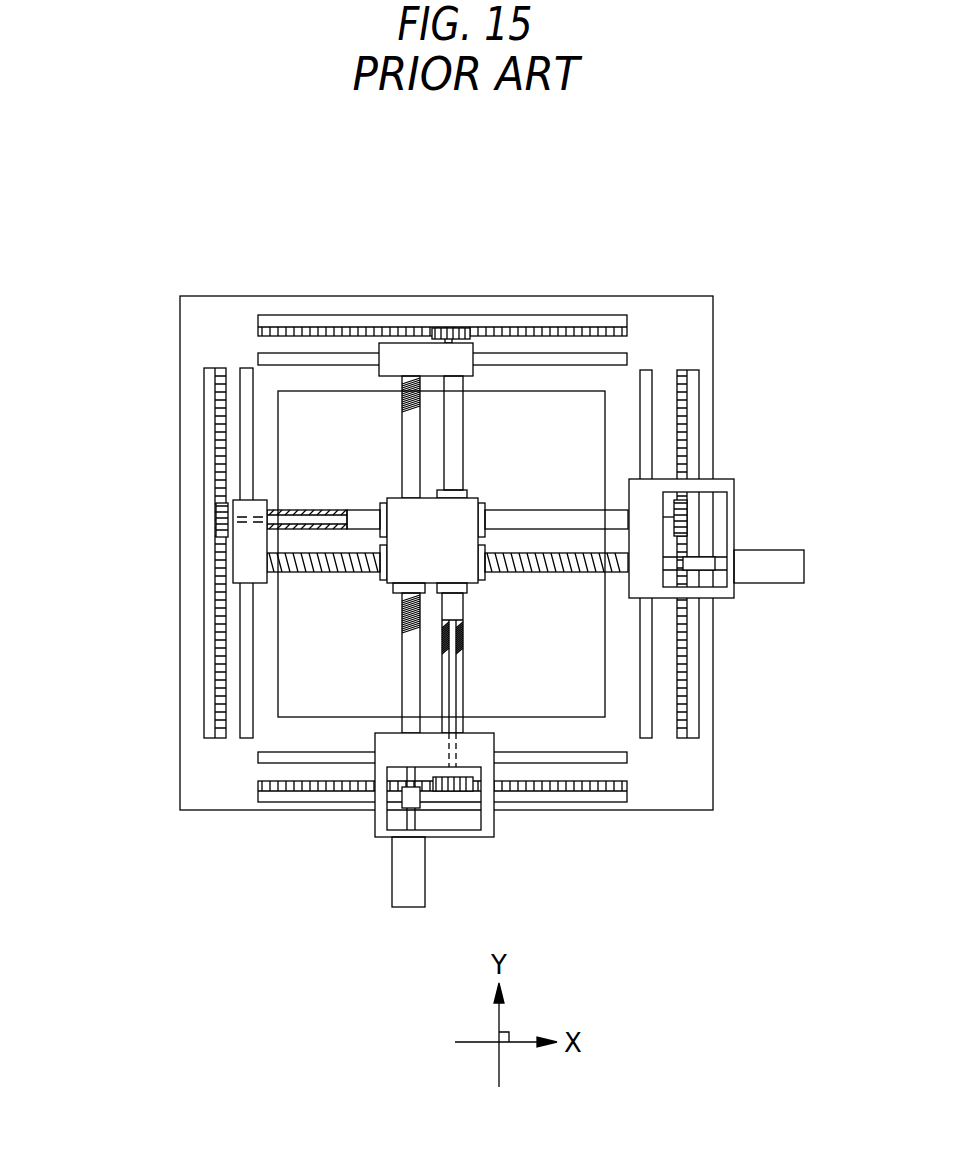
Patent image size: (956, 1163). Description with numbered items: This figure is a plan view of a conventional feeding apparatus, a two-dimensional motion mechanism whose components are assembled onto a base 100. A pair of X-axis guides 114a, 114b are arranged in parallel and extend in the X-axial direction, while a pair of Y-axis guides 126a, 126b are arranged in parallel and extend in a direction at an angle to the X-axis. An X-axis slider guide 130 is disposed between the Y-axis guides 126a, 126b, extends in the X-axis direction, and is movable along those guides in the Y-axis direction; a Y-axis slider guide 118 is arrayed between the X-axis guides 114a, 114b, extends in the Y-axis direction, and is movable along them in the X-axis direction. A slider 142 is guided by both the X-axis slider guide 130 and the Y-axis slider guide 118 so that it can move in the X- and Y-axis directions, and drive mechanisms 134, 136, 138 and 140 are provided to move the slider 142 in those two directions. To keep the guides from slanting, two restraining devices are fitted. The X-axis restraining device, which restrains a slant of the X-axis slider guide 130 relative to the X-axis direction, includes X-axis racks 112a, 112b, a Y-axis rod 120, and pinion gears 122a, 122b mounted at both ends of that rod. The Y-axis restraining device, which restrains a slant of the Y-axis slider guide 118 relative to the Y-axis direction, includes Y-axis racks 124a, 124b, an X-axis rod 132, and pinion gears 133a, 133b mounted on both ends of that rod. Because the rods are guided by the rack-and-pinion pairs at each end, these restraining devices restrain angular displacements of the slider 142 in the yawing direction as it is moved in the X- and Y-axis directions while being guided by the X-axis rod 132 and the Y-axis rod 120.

The base 100 is at (655, 325).
The X-axis rack 112a is at (532, 327).
The X-axis rack 112b is at (590, 797).
The X-axis guide 114a is at (330, 358).
The X-axis guide 114b is at (275, 758).
The Y-axis slider guide 118 is at (465, 415).
The Y-axis rod 120 is at (465, 665).
The pinion gear 122a is at (447, 330).
The pinion gear 122b is at (447, 787).
The Y-axis rack 124a is at (687, 458).
The Y-axis rack 124b is at (220, 487).
The Y-axis guide 126a is at (647, 378).
The Y-axis guide 126b is at (247, 427).
The X-axis slider guide 130 is at (557, 517).
The X-axis rod 132 is at (312, 510).
The pinion gear 133a is at (688, 524).
The pinion gear 133b is at (217, 516).
The drive mechanism 134 is at (556, 573).
The drive mechanism 136 is at (775, 573).
The drive mechanism 138 is at (400, 665).
The drive mechanism 140 is at (402, 877).
The slider 142 is at (397, 572).